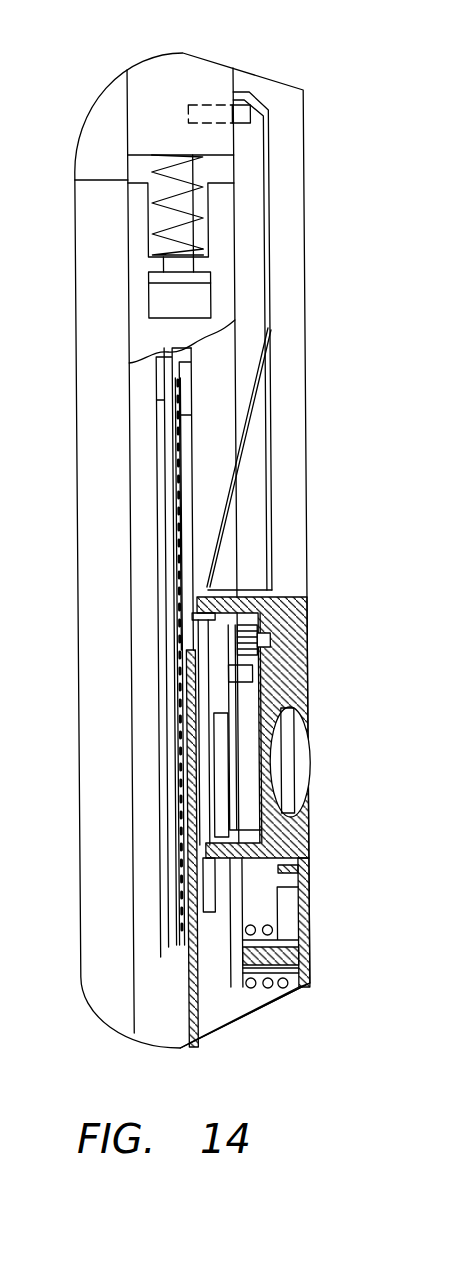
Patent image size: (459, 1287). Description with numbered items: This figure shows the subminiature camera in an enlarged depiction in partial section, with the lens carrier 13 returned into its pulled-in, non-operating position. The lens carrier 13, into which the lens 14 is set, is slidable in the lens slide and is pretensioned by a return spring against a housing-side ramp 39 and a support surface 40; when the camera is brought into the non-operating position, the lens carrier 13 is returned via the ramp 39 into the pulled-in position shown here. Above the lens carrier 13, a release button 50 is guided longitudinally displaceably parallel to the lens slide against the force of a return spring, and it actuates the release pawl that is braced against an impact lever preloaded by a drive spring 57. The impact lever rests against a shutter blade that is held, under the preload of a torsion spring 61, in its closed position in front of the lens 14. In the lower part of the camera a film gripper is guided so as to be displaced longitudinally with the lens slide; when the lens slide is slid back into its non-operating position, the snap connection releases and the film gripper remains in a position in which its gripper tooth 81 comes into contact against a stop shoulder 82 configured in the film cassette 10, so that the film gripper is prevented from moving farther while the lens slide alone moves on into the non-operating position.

The film cassette 10 is at (100, 222).
The release button 50 is at (166, 85).
The support surface 40 is at (273, 196).
The ramp 39 is at (256, 392).
The lens carrier 13 is at (290, 620).
The lens 14 is at (288, 744).
The torsion spring 61 is at (253, 660).
The gripper tooth 81 is at (188, 642).
The stop shoulder 82 is at (183, 668).
The drive spring 57 is at (276, 985).